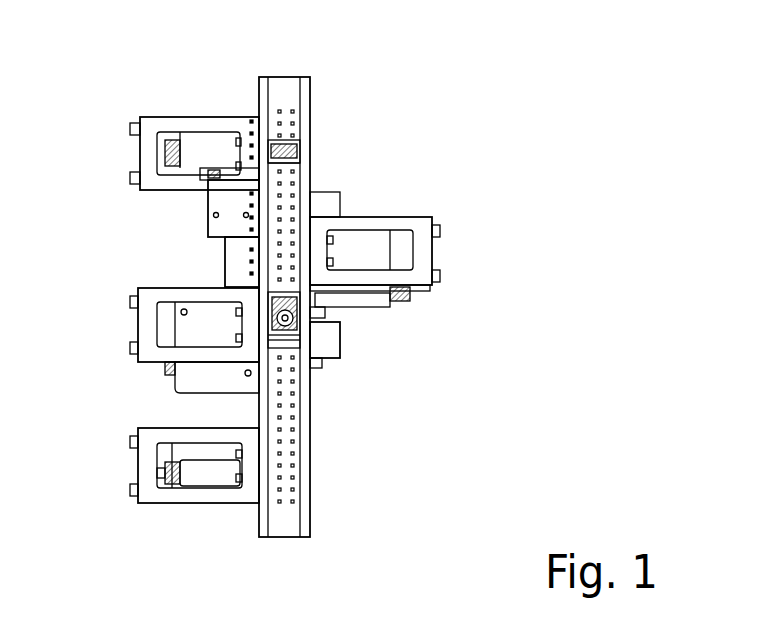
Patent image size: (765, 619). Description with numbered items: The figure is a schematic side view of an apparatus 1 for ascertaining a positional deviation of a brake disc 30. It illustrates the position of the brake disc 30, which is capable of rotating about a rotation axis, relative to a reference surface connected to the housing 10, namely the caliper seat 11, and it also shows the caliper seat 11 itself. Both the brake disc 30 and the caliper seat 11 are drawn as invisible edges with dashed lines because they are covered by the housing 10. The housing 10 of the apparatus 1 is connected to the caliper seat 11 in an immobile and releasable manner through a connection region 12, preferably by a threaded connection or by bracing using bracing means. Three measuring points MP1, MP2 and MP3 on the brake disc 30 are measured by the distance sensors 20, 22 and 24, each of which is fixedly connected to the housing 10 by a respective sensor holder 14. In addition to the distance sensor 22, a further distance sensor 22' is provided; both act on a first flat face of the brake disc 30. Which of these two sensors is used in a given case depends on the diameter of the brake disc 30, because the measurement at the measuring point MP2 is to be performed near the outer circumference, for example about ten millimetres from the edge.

The apparatus 1 is at (380, 132).
The housing 10 is at (265, 82).
The caliper seat 11 is at (253, 138).
The connection region 12 is at (343, 338).
The sensor holder 14 is at (150, 493).
The distance sensor 20 is at (188, 328).
The distance sensor 22 is at (187, 116).
The distance sensor 22' is at (136, 476).
The distance sensor 24 is at (375, 258).
The brake disc 30 is at (287, 443).
The measuring point MP1 is at (267, 320).
The measuring point MP2 is at (275, 470).
The measuring point MP3 is at (293, 252).